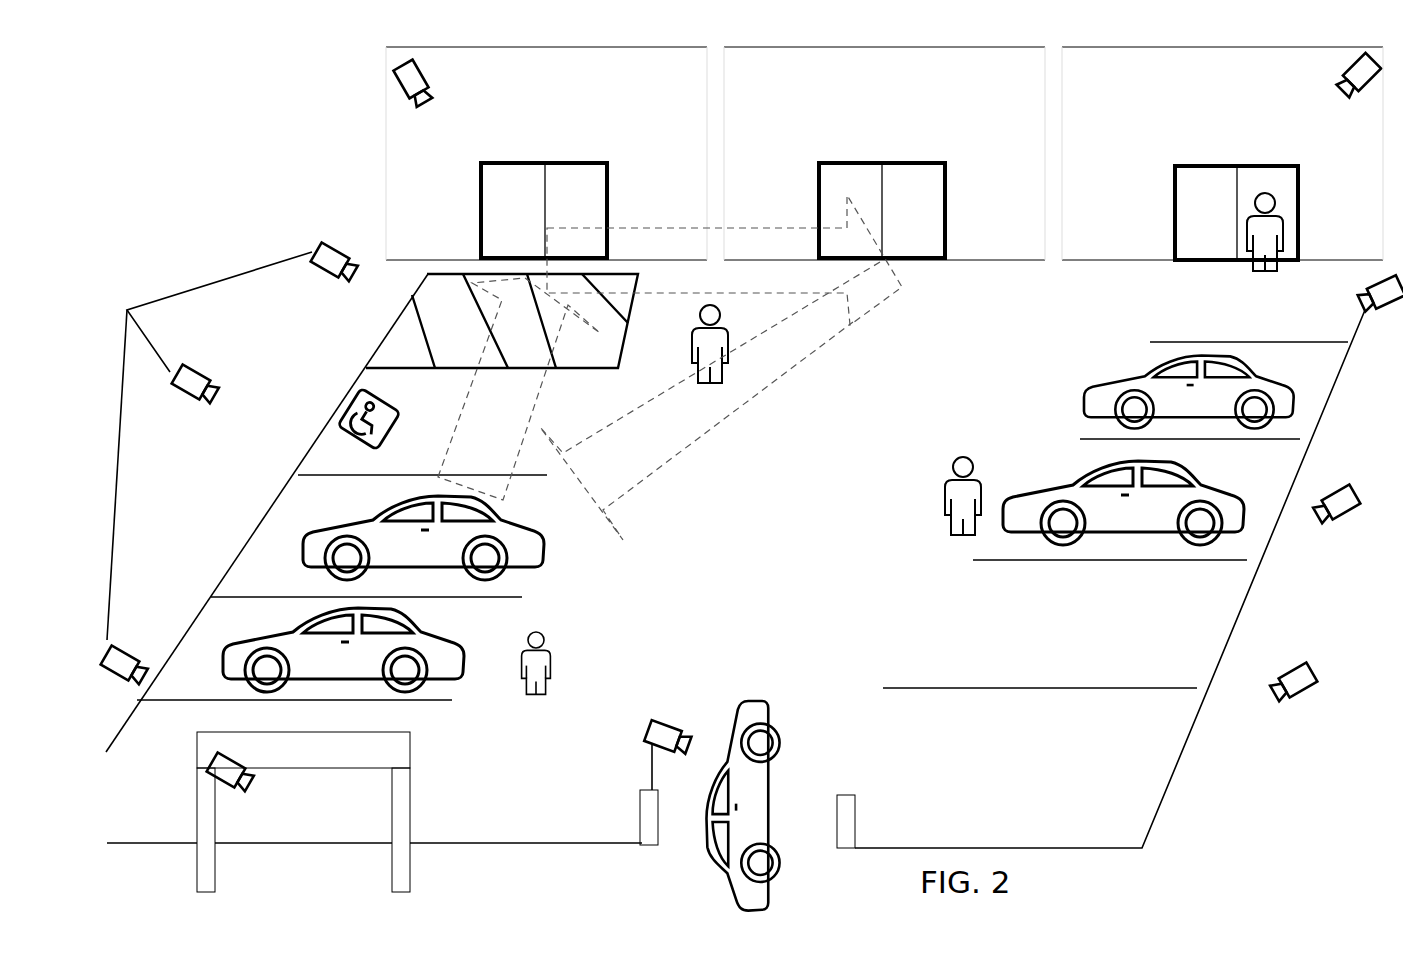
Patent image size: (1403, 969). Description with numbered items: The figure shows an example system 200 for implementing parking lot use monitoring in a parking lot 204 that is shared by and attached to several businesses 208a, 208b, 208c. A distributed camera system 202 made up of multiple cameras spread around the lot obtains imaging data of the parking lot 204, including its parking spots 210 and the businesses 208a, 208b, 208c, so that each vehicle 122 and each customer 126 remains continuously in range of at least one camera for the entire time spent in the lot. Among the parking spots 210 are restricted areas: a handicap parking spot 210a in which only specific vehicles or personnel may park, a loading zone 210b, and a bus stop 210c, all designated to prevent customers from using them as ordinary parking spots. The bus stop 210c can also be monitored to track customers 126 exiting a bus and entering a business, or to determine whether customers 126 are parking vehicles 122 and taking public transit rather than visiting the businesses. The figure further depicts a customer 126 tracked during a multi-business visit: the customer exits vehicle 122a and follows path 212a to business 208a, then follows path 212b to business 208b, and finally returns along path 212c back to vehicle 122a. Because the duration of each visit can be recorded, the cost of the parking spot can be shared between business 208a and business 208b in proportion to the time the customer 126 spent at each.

The system for implementing parking lot use monitoring 200 is at (260, 72).
The distributed camera system 202 is at (752, 423).
The parking lot 204 is at (1110, 579).
The business 208a is at (546, 153).
The business 208b is at (884, 153).
The business 208c is at (1222, 159).
The parking spots 210 is at (902, 773).
The handicap parking spot 210a is at (357, 407).
The loading zone 210b is at (428, 327).
The bus stop 210c is at (400, 750).
The path 212a is at (519, 389).
The path 212b is at (724, 260).
The path 212c is at (710, 401).
The vehicle 122 is at (1087, 517).
The vehicle 122a is at (480, 530).
The customer 126 is at (712, 345).